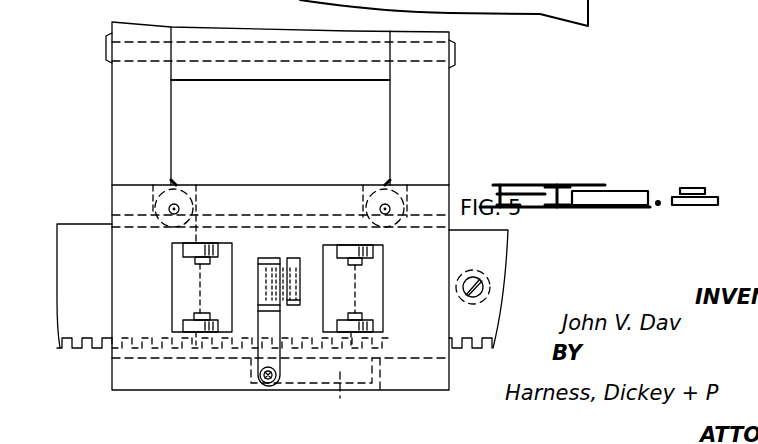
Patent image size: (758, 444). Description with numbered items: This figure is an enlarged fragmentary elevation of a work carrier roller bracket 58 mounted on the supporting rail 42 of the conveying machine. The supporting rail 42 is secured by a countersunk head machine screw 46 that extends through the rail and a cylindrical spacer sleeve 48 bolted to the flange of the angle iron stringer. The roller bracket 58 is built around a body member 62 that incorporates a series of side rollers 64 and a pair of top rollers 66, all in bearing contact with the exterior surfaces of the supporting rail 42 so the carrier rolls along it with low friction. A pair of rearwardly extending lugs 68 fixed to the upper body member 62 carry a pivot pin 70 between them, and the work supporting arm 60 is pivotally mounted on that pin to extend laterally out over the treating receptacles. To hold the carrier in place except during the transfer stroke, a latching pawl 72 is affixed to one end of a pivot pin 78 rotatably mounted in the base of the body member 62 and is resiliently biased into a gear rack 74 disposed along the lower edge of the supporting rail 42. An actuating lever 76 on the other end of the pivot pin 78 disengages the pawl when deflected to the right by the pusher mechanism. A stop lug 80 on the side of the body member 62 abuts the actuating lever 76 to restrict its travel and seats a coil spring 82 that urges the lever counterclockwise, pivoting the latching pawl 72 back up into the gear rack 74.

The supporting rail 42 is at (475, 320).
The countersunk head machine screw 46 is at (482, 288).
The cylindrical spacer sleeve 48 is at (492, 265).
The roller bracket 58 is at (252, 185).
The work supporting arm 60 is at (315, 75).
The body member 62 is at (120, 199).
The side rollers 64 is at (183, 250).
The top rollers 66 is at (190, 188).
The rearwardly extending lugs 68 is at (153, 115).
The pivot pin 70 is at (455, 55).
The latching pawl 72 is at (340, 400).
The gear rack 74 is at (465, 352).
The actuating lever 76 is at (262, 328).
The pivot pin 78 is at (262, 392).
The stop lug 80 is at (296, 258).
The coil spring 82 is at (300, 305).